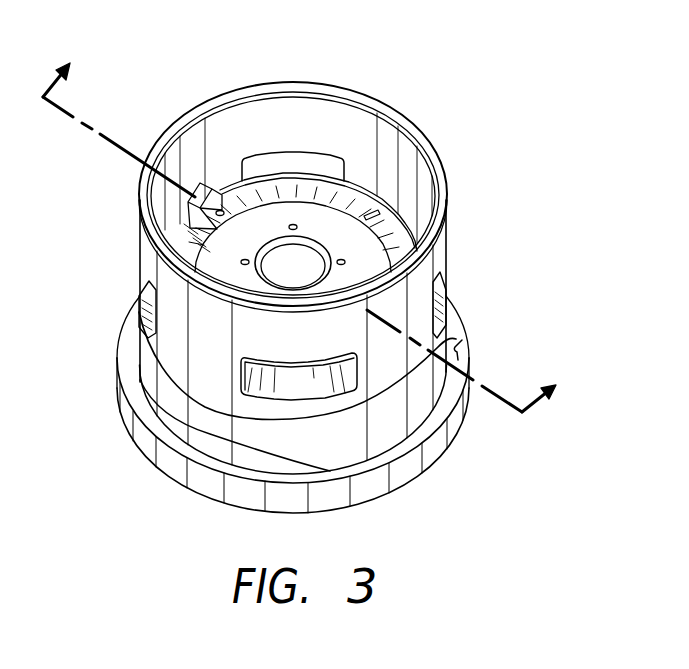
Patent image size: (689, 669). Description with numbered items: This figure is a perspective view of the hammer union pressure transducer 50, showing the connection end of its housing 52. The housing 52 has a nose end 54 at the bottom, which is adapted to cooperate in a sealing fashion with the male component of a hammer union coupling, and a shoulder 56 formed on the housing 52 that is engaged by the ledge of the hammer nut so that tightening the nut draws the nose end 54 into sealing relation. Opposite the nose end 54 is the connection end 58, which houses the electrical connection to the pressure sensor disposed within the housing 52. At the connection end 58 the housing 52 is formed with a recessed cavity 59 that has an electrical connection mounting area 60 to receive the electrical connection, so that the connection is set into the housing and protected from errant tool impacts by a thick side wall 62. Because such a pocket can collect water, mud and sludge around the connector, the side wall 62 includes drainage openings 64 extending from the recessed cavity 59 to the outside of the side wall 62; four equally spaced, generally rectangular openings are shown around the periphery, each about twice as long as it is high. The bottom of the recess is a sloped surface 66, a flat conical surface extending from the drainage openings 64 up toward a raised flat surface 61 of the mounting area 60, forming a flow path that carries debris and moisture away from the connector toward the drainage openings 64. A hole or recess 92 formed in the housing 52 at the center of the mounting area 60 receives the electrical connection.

The hammer union pressure transducer 50 is at (500, 60).
The housing 52 is at (140, 222).
The nose end 54 is at (377, 510).
The shoulder 56 is at (462, 342).
The connection end 58 is at (445, 240).
The recessed cavity 59 is at (352, 135).
The electrical connection mounting area 60 is at (265, 215).
The raised flat surface 61 is at (340, 227).
The side wall 62 is at (438, 186).
The drainage openings 64 is at (323, 150).
The sloped surface 66 is at (374, 214).
The hole or recess 92 is at (281, 277).